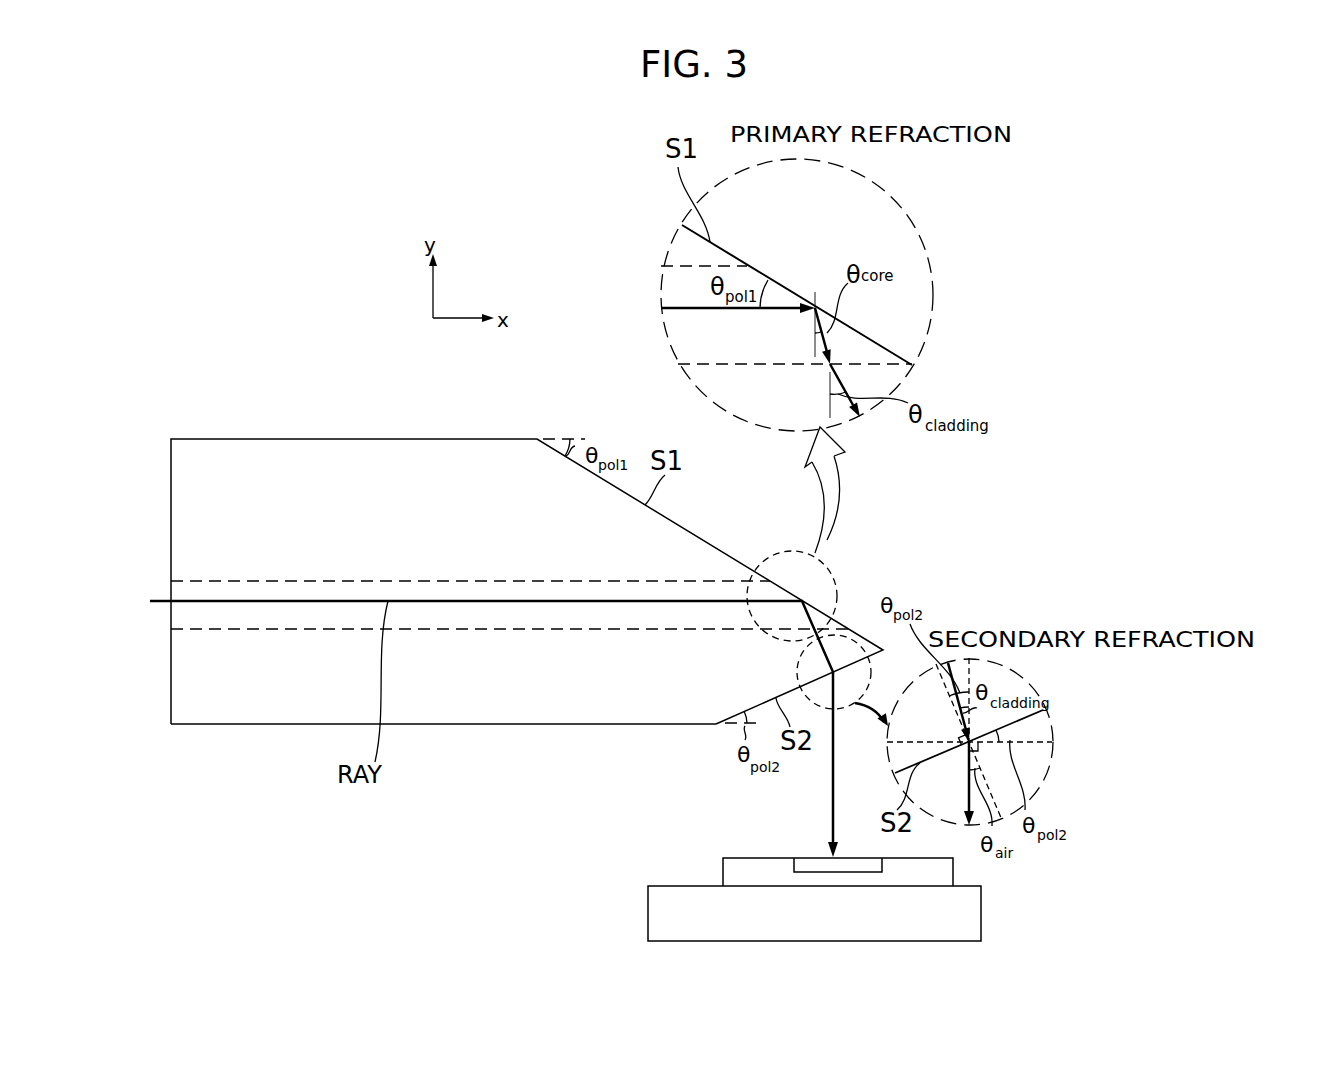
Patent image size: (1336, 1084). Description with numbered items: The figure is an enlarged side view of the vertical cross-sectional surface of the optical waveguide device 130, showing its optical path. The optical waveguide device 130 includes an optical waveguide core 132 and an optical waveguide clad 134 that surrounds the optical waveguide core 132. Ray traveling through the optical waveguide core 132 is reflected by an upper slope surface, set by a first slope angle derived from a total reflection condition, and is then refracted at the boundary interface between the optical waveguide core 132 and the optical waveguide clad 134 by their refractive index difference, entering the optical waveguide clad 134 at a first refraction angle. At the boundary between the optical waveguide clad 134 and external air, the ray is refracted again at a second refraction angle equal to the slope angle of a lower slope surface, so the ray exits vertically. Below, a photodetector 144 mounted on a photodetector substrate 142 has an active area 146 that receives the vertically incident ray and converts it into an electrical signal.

The optical waveguide device 130 is at (357, 412).
The optical waveguide core 132 is at (255, 590).
The optical waveguide clad 134 is at (262, 703).
The photodetector substrate 142 is at (648, 922).
The photodetector 144 is at (723, 875).
The active area 146 is at (793, 863).